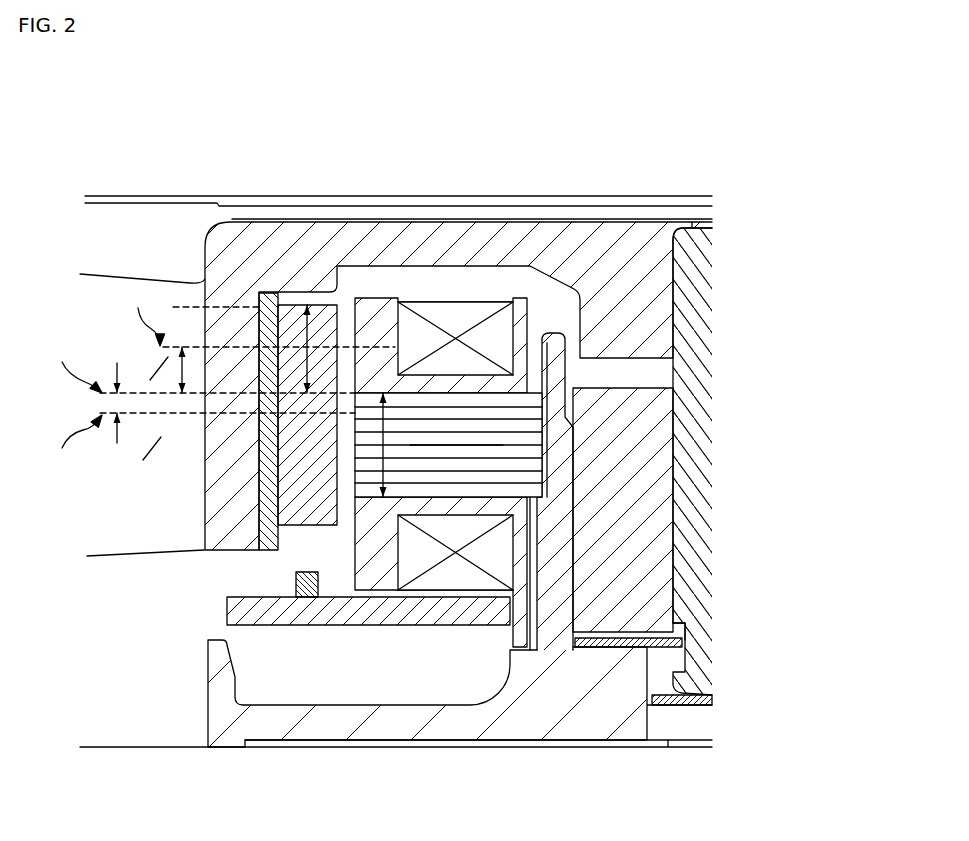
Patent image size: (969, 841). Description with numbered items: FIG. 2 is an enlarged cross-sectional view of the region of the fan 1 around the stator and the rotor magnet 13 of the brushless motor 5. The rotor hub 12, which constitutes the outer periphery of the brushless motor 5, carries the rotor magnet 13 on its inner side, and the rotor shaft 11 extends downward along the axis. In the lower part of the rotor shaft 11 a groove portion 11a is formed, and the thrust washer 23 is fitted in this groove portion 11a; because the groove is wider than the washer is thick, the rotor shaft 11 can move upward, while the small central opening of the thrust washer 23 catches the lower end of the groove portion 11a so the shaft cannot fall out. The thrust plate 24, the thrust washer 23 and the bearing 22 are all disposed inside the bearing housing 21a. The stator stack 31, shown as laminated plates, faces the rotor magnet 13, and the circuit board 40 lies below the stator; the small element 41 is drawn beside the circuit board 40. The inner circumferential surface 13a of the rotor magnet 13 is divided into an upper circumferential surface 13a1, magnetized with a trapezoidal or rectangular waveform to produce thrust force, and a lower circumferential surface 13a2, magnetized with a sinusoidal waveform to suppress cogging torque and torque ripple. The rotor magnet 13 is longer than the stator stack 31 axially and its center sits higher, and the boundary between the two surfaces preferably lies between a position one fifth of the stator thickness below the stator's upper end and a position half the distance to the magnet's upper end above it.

The fan 1 is at (352, 158).
The brushless motor 5 is at (203, 225).
The rotor shaft 11 is at (707, 672).
The groove portion 11a is at (684, 632).
The rotor hub 12 is at (518, 227).
The rotor magnet 13 is at (369, 548).
The inner circumferential surface 13a is at (182, 421).
The upper circumferential surface 13a1 is at (330, 403).
The lower circumferential surface 13a2 is at (297, 503).
The bearing housing 21a is at (570, 600).
The bearing 22 is at (640, 470).
The thrust washer 23 is at (643, 648).
The thrust plate 24 is at (688, 700).
The stator stack 31 is at (503, 439).
The circuit board 40 is at (387, 600).
The spacer 41 is at (315, 597).